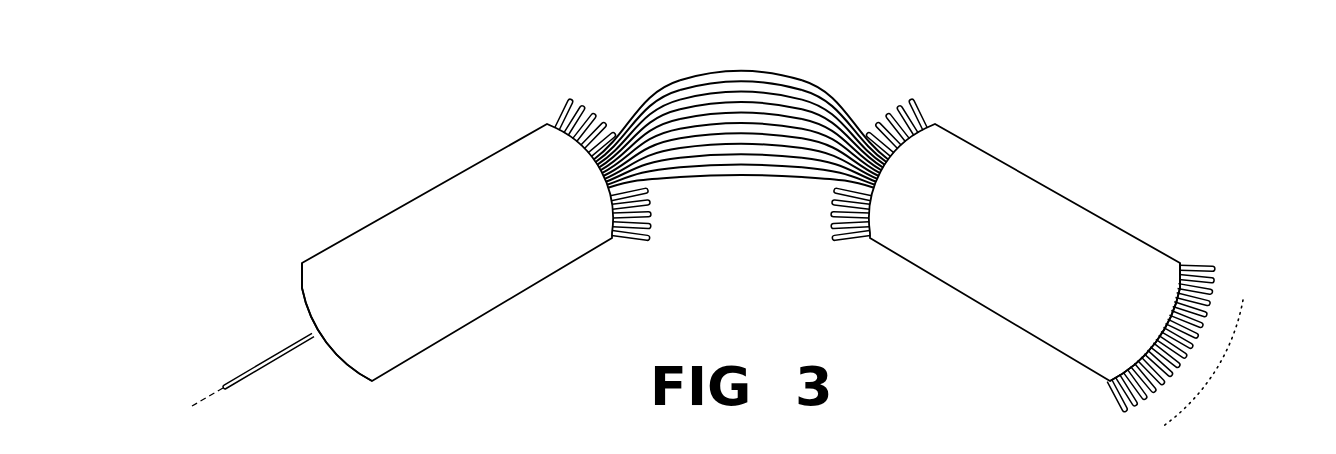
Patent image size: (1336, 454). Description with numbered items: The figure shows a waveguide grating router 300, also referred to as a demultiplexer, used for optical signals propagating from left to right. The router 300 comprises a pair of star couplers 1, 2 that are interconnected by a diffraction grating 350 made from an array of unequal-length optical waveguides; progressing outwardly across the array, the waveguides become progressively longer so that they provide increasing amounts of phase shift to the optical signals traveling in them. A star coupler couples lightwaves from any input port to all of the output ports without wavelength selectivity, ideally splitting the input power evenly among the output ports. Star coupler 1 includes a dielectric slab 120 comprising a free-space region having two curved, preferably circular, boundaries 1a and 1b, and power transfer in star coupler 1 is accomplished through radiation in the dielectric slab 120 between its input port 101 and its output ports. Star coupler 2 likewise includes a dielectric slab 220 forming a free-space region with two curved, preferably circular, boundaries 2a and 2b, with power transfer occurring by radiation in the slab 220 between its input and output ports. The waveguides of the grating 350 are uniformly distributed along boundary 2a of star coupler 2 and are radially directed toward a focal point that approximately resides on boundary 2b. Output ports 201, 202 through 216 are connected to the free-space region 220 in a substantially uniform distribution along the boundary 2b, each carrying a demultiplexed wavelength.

The star coupler 1 is at (453, 239).
The boundary 1a is at (300, 272).
The boundary 1b is at (616, 236).
The input port 101 is at (285, 346).
The dielectric slab 120 is at (470, 264).
The star coupler 2 is at (1076, 276).
The boundary 2a is at (862, 236).
The boundary 2b is at (1216, 342).
The dielectric slab 220 is at (1036, 264).
The output port 201 is at (1216, 270).
The output port 202 is at (1217, 281).
The output port 216 is at (1132, 412).
The router 300 is at (738, 118).
The diffraction grating 350 is at (677, 190).